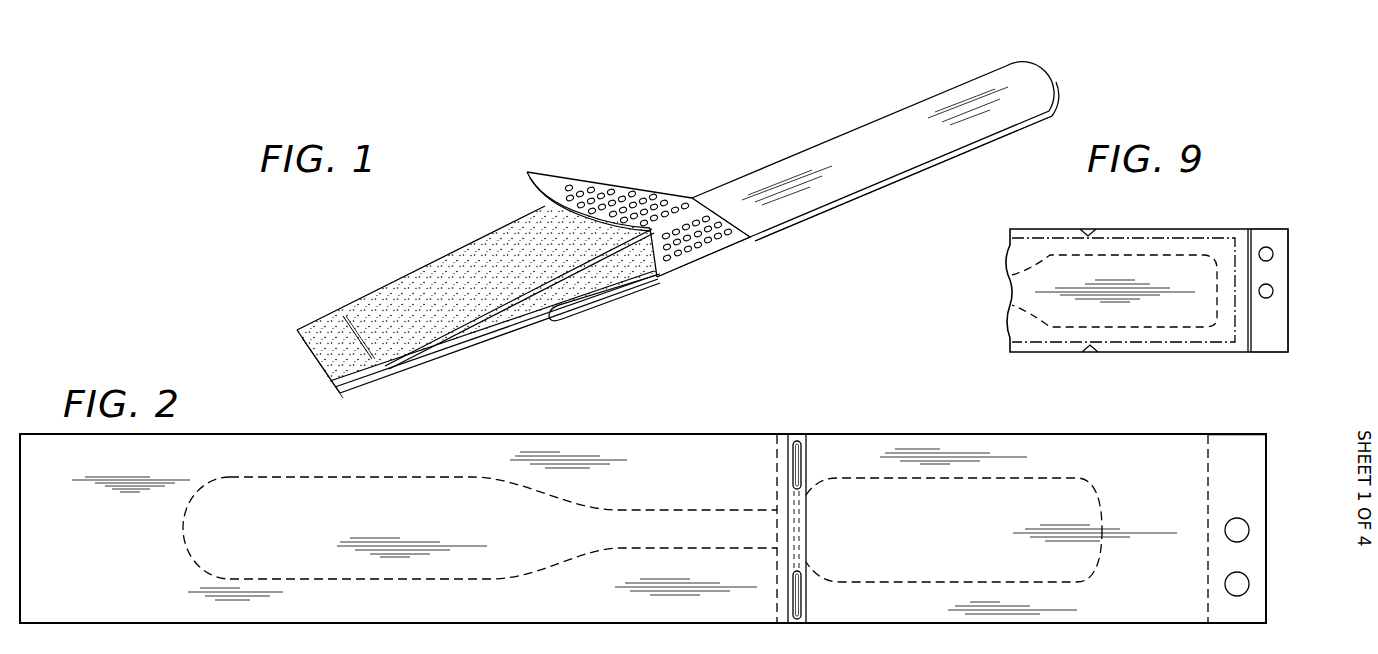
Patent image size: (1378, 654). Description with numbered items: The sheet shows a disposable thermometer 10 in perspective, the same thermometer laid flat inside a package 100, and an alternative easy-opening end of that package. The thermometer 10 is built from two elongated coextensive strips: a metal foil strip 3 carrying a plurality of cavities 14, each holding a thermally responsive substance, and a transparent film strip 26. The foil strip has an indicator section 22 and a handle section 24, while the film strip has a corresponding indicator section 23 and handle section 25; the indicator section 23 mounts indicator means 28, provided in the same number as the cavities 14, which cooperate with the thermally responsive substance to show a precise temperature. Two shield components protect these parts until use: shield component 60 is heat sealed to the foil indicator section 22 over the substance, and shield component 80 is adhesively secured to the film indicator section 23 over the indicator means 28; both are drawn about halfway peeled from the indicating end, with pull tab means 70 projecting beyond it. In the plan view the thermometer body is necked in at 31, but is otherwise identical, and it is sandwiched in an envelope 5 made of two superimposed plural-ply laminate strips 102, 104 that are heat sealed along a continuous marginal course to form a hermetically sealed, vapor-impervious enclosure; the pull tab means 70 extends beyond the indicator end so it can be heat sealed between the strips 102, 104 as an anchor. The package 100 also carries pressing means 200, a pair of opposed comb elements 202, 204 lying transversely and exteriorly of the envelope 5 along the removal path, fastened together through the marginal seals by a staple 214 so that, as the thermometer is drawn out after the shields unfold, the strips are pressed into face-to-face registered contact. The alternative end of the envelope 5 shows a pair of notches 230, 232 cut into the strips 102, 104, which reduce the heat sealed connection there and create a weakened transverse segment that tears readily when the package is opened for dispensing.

In FIG. 1, the metal foil thermometer strip 3 is at (693, 270).
In FIG. 9, the envelope 5 is at (1215, 232).
In FIG. 2, the envelope 5 is at (995, 445).
In FIG. 1, the thermometer 10 is at (701, 174).
In FIG. 2, the thermometer 10 is at (478, 470).
In FIG. 1, the cavities 14 is at (710, 248).
In FIG. 1, the indicator section 22 is at (663, 276).
In FIG. 1, the indicator section 23 is at (615, 188).
In FIG. 1, the handle section 24 is at (912, 163).
In FIG. 2, the handle section 24 is at (980, 577).
In FIG. 1, the handle section 25 is at (930, 103).
In FIG. 2, the handle section 25 is at (954, 504).
In FIG. 1, the transparent film thermometer strip 26 is at (523, 176).
In FIG. 1, the indicator means 28 is at (663, 197).
In FIG. 2, the necking in of thermometer body 31 is at (675, 510).
In FIG. 1, the shield component 60 is at (495, 337).
In FIG. 1, the pull tab means 70 is at (301, 354).
In FIG. 1, the shield component 80 is at (387, 283).
In FIG. 2, the thermometer package 100 is at (918, 428).
In FIG. 9, the envelope strip 102 is at (1280, 310).
In FIG. 2, the envelope strip 102 is at (1166, 496).
In FIG. 9, the envelope strip 104 is at (1250, 330).
In FIG. 2, the envelope strip 104 is at (1210, 455).
In FIG. 2, the pressing means 200 is at (812, 459).
In FIG. 2, the comb element 202 is at (808, 614).
In FIG. 2, the comb element 204 is at (777, 598).
In FIG. 2, the staple 214 is at (803, 590).
In FIG. 9, the notch 230 is at (1088, 228).
In FIG. 9, the notch 232 is at (1092, 349).